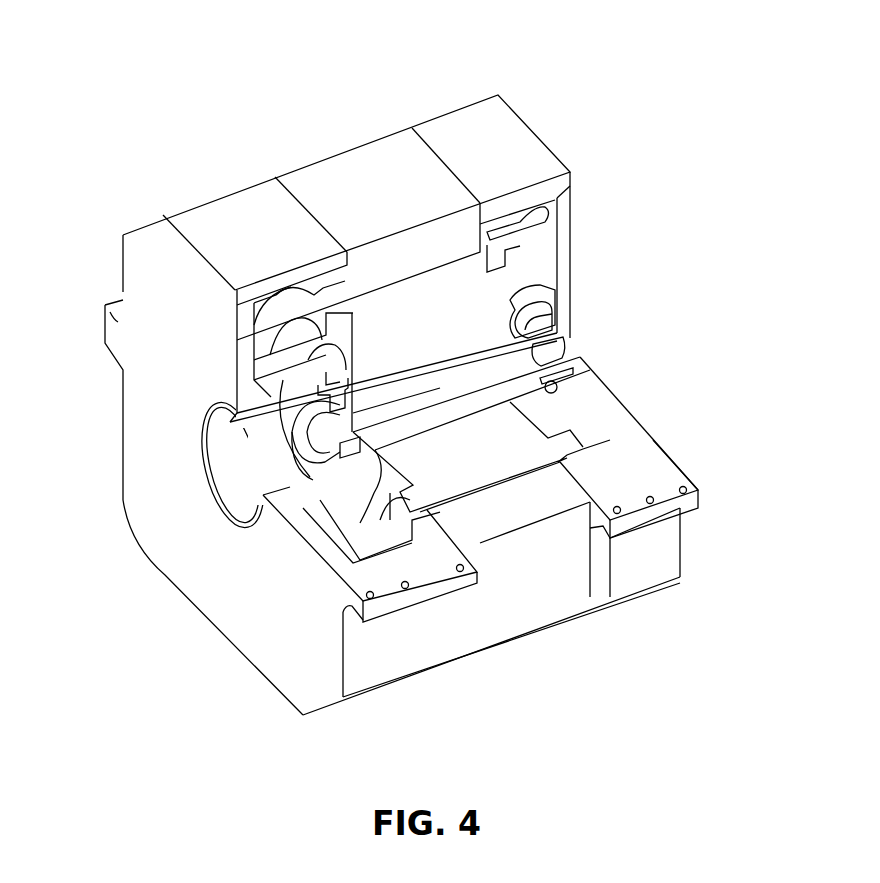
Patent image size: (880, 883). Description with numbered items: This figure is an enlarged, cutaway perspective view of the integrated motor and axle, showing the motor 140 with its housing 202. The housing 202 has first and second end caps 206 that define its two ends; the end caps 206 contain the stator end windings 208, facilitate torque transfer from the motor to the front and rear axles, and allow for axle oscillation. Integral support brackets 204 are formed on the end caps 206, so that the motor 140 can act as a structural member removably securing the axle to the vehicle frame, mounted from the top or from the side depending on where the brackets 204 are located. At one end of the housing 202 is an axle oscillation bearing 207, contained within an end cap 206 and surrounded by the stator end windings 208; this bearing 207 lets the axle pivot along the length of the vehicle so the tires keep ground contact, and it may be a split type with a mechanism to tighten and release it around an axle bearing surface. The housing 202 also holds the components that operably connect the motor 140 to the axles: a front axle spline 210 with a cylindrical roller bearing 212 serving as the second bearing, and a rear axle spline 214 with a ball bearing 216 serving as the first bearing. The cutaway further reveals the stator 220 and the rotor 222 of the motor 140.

The motor 140 is at (252, 62).
The housing 202 is at (688, 570).
The support brackets 204 is at (393, 600).
The end caps 206 is at (310, 675).
The axle oscillation bearing 207 is at (225, 477).
The stator end windings 208 is at (360, 533).
The front axle spline 210 is at (300, 425).
The cylindrical roller bearing 212 is at (326, 388).
The rear axle spline 214 is at (552, 347).
The ball bearing 216 is at (547, 313).
The stator 220 is at (353, 167).
The rotor 222 is at (432, 378).